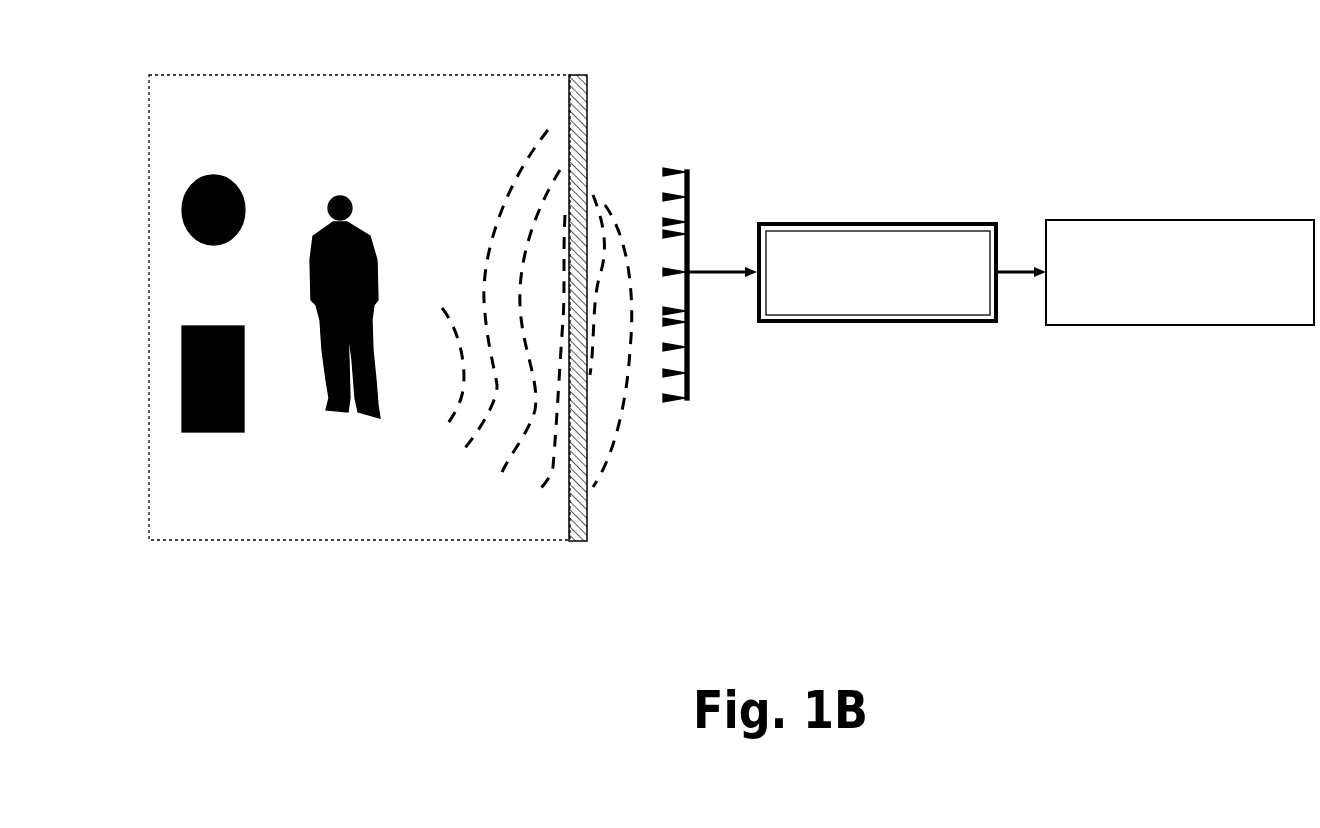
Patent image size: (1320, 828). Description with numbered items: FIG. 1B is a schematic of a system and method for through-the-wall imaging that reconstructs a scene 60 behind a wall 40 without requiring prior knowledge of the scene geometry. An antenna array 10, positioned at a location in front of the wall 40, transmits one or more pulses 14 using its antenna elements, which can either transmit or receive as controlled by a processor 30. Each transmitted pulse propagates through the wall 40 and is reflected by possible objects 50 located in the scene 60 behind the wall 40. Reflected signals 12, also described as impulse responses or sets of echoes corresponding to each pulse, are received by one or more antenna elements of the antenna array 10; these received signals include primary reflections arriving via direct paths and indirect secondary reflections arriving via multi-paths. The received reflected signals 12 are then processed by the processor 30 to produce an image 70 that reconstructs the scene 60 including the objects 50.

The antenna array 10 is at (670, 412).
The reflected signals 12 is at (533, 490).
The pulses 14 is at (613, 205).
The processor 30 is at (827, 222).
The wall 40 is at (577, 75).
The objects 50 is at (248, 236).
The scene 60 is at (362, 102).
The image 70 is at (1070, 220).